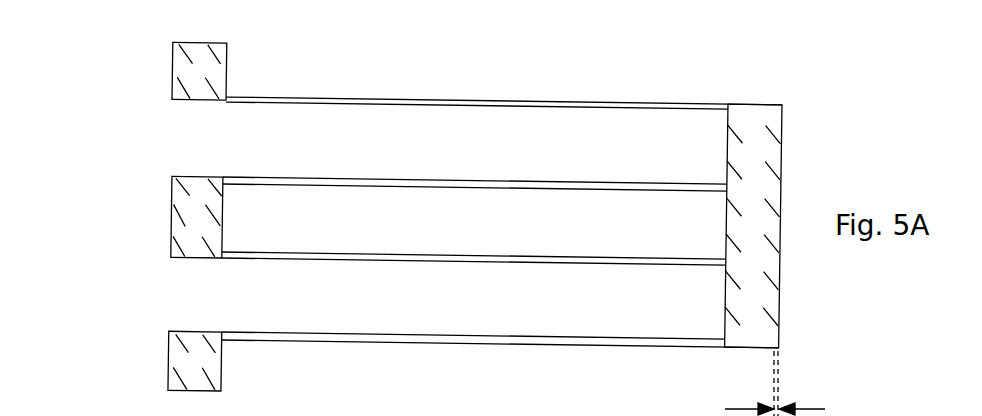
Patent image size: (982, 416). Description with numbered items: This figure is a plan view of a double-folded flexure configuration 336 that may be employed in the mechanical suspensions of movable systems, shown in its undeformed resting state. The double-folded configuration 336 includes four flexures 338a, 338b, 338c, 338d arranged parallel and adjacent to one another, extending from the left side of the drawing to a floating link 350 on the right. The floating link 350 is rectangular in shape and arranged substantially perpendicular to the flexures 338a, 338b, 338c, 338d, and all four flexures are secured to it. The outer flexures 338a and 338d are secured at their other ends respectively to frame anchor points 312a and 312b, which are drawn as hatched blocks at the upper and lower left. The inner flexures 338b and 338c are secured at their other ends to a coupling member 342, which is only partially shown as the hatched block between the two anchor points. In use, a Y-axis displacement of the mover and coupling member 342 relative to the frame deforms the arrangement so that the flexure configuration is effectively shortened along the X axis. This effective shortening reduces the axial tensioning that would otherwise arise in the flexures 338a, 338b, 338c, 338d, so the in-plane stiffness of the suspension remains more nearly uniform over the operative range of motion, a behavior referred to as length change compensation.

The double-folded configuration 336 is at (95, 140).
The frame anchor point 312a is at (172, 68).
The frame anchor point 312b is at (168, 362).
The coupling member 342 is at (171, 212).
The outer flexure 338a is at (502, 100).
The inner flexure 338b is at (500, 180).
The inner flexure 338c is at (500, 254).
The outer flexure 338d is at (498, 334).
The floating link 350 is at (781, 217).